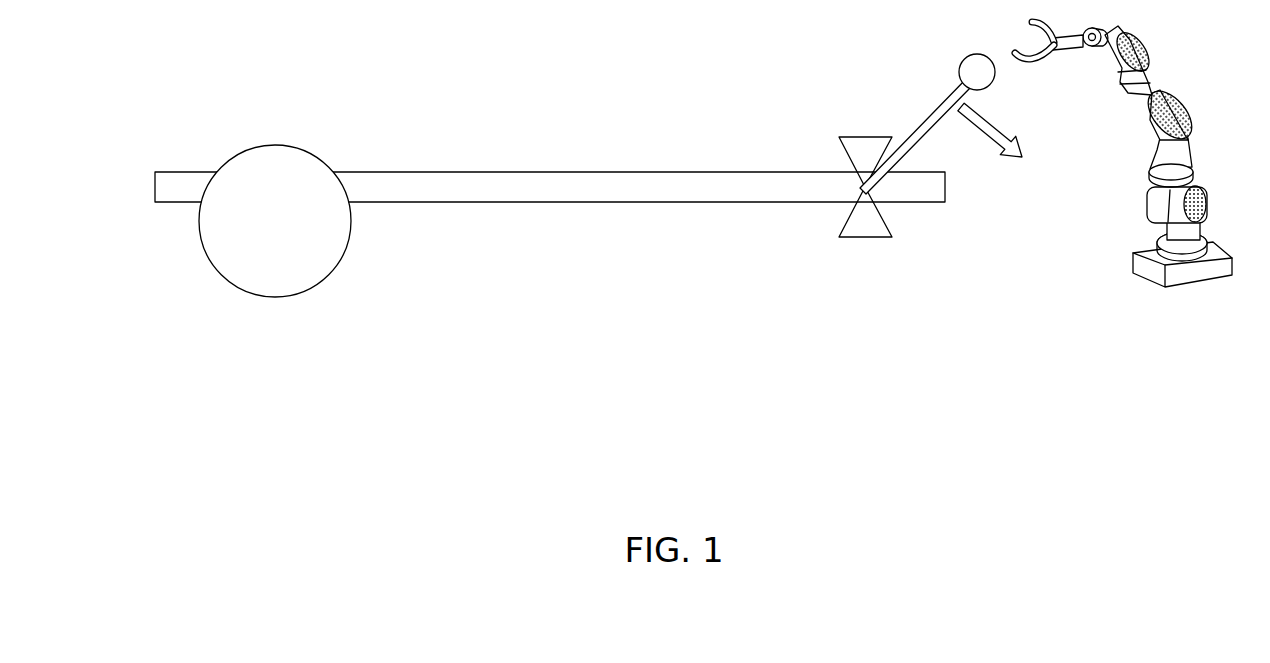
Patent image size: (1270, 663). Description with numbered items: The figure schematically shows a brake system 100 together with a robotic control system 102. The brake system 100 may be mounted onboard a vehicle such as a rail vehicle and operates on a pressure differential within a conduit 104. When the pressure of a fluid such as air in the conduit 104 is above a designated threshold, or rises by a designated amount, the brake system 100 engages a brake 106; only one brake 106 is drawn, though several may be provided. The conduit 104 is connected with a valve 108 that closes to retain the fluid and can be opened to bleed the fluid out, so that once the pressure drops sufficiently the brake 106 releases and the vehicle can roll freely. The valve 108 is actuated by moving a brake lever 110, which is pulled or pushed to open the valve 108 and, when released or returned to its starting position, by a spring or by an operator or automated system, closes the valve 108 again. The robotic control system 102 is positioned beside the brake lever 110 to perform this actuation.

The brake system 100 is at (588, 237).
The robotic control system 102 is at (1238, 338).
The conduit 104 is at (630, 171).
The brake 106 is at (274, 144).
The valve 108 is at (867, 239).
The brake lever 110 is at (920, 124).